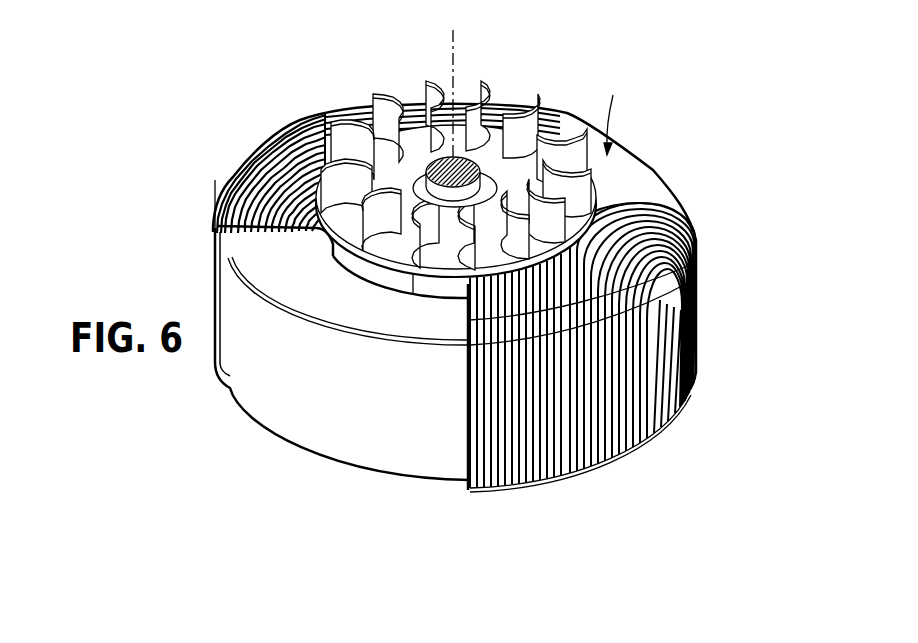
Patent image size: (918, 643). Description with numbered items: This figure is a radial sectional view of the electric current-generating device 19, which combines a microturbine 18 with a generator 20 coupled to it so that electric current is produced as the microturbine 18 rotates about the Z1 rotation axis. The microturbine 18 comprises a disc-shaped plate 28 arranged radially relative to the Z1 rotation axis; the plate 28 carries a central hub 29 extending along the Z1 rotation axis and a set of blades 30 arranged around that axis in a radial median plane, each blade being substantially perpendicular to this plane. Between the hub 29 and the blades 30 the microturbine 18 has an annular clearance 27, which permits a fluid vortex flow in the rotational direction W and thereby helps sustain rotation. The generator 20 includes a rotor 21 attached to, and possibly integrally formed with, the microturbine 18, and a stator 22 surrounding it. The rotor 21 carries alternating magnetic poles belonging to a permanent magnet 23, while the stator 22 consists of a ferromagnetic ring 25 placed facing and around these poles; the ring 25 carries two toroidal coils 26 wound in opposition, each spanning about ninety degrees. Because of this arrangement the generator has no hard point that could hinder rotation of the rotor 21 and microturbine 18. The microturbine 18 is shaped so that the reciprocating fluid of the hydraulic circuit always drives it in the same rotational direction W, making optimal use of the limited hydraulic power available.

The microturbine 18 is at (539, 102).
The electric current-generating device 19 is at (645, 68).
The generator 20 is at (700, 191).
The rotor 21 is at (428, 310).
The stator 22 is at (710, 244).
The permanent magnet 23 is at (390, 272).
The ferromagnetic ring 25 is at (275, 407).
The coils 26 is at (627, 400).
The annular clearance 27 is at (503, 152).
The disc-shaped plate 28 is at (572, 235).
The hub 29 is at (437, 158).
The blades 30 is at (350, 120).
The rotation axis Z1 is at (457, 40).
The rotational direction W is at (608, 110).